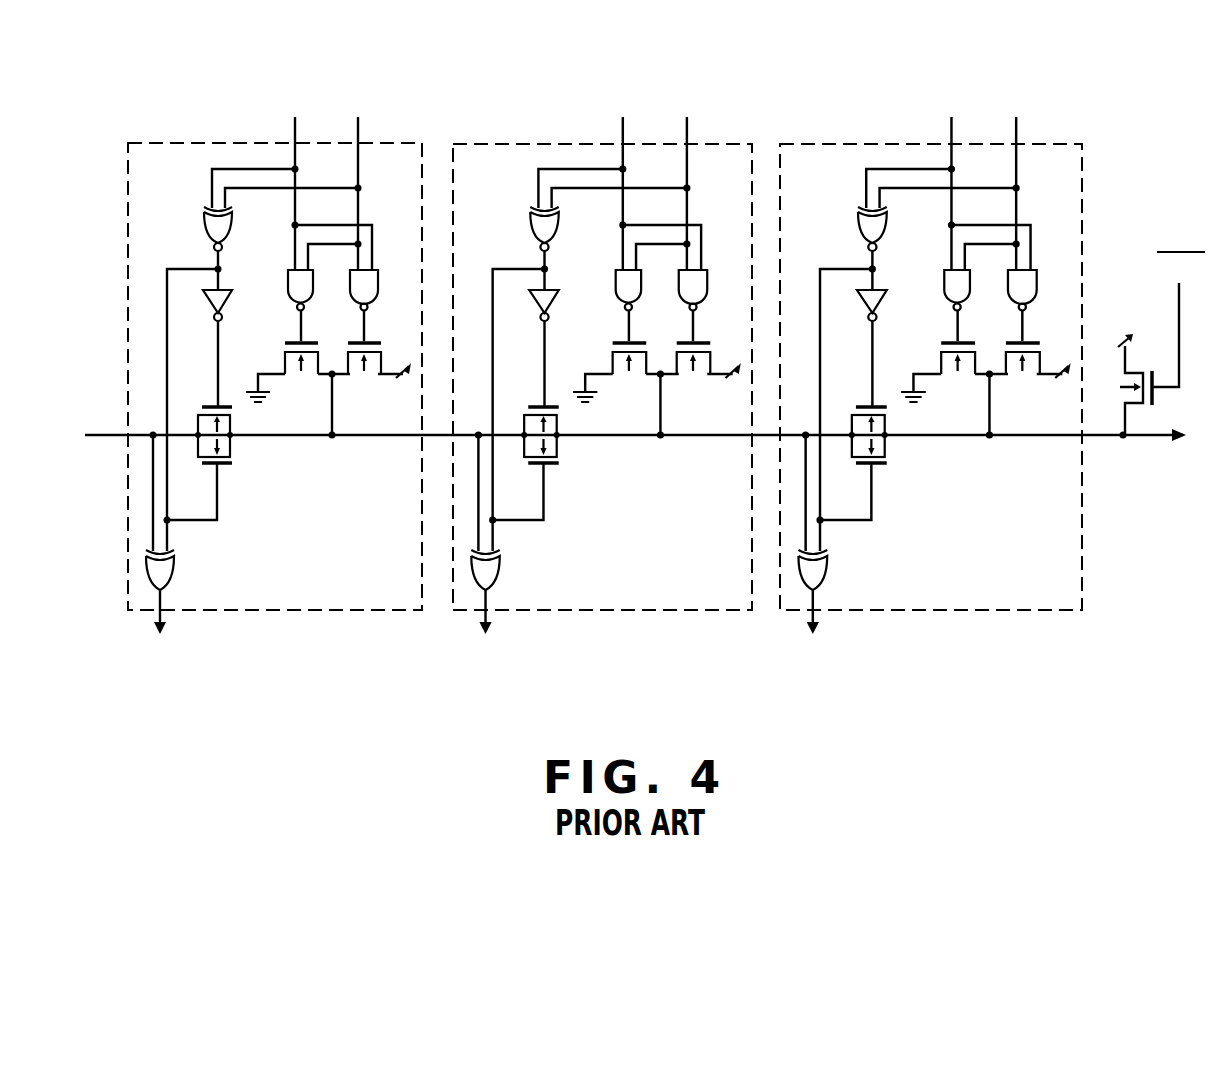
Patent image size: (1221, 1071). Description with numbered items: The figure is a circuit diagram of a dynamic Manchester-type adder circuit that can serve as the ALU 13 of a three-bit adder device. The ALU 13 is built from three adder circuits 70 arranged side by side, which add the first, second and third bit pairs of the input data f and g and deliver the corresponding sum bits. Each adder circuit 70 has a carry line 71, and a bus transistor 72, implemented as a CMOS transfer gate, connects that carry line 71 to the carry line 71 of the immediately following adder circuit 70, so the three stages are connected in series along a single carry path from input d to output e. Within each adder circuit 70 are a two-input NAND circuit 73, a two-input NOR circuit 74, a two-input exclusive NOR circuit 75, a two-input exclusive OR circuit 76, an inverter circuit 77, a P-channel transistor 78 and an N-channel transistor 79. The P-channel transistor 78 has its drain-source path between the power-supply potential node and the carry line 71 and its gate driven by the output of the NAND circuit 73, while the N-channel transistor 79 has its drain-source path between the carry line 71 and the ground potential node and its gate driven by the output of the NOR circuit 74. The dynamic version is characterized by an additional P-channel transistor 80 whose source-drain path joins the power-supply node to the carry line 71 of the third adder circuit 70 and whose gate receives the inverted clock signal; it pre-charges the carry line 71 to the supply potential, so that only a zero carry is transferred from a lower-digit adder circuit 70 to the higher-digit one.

The ALU 13 is at (598, 59).
The adder circuit 70 is at (823, 144).
The carry line 71 is at (1031, 458).
The bus transistor 72 is at (914, 477).
The two-input NAND circuit 73 is at (379, 291).
The two-input NOR circuit 74 is at (314, 289).
The two-input exclusive NOR circuit 75 is at (203, 229).
The two-input exclusive OR circuit 76 is at (175, 568).
The inverter circuit 77 is at (233, 297).
The P-channel transistor 78 is at (385, 353).
The N-channel transistor 79 is at (282, 356).
The P-channel transistor 80 is at (1136, 366).